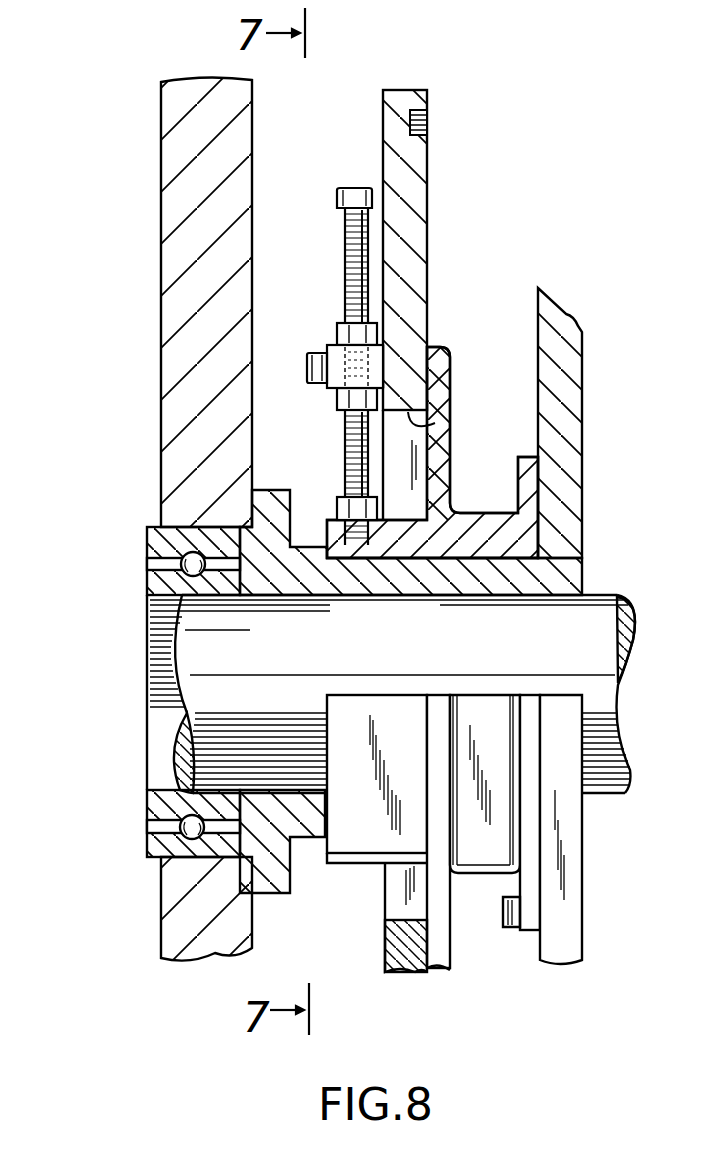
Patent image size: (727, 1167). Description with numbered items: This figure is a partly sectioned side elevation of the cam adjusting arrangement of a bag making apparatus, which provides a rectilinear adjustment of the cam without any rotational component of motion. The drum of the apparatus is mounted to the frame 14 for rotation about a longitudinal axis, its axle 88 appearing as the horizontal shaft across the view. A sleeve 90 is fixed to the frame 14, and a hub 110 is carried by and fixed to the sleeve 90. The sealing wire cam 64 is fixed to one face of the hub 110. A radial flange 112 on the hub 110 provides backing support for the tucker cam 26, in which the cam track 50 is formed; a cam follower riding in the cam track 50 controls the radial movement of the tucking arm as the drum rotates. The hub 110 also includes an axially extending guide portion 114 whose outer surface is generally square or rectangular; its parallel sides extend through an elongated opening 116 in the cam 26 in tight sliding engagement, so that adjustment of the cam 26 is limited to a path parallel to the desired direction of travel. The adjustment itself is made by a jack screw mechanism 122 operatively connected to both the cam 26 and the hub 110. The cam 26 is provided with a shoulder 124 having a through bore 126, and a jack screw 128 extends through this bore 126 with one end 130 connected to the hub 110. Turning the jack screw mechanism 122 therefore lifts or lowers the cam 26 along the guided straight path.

The frame 14 is at (165, 242).
The cam 26 is at (441, 305).
The cam track 50 is at (427, 126).
The sealing wire cam 64 is at (578, 390).
The axle 88 is at (203, 670).
The sleeve 90 is at (307, 580).
The hub 110 is at (432, 452).
The radial flange 112 is at (447, 373).
The guide portion 114 is at (330, 708).
The elongated opening 116 is at (435, 423).
The jack screw mechanism 122 is at (324, 366).
The shoulder 124 is at (338, 388).
The through bore 126 is at (395, 343).
The jack screw 128 is at (345, 236).
The end 130 is at (355, 487).